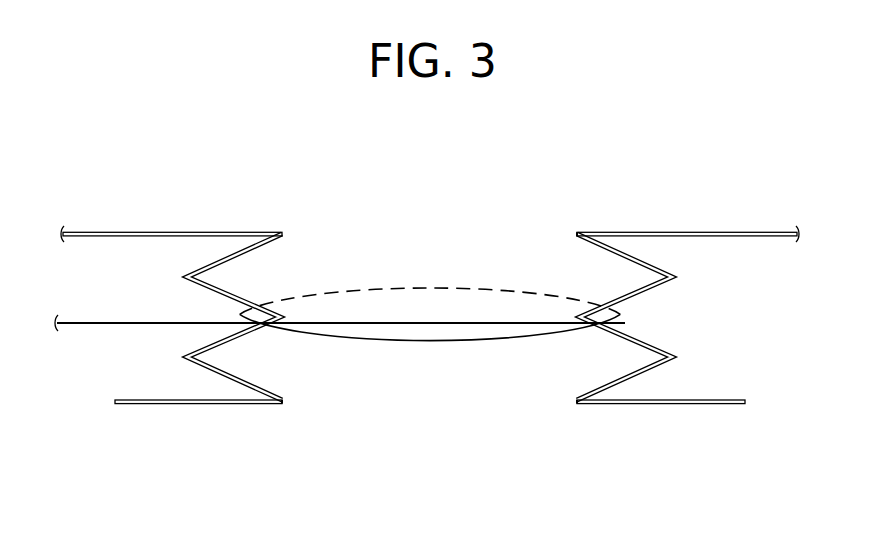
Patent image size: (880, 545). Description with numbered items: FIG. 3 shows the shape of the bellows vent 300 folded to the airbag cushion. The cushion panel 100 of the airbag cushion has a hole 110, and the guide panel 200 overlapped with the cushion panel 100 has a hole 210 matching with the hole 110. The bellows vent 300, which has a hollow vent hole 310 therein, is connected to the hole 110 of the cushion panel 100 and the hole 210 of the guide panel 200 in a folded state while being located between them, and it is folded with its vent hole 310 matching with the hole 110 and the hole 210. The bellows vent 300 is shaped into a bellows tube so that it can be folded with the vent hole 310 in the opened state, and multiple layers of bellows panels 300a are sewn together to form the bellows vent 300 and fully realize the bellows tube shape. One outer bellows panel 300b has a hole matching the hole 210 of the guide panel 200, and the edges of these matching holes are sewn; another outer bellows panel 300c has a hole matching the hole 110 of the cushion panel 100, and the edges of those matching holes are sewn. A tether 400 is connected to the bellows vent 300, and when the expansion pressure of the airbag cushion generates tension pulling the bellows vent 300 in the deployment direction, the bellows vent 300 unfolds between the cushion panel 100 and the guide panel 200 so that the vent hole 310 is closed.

The cushion panel 100 is at (747, 232).
The hole 110 is at (575, 232).
The guide panel 200 is at (162, 404).
The hole 210 is at (285, 404).
The bellows vent 300 is at (172, 277).
The bellows panels 300a is at (233, 295).
The outer bellows panel 300b is at (634, 375).
The outer bellows panel 300c is at (636, 253).
The vent hole 310 is at (388, 252).
The tether 400 is at (395, 323).